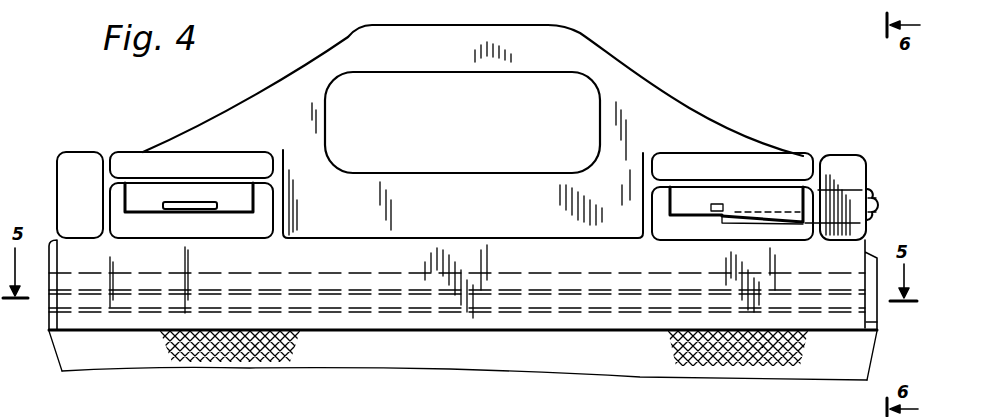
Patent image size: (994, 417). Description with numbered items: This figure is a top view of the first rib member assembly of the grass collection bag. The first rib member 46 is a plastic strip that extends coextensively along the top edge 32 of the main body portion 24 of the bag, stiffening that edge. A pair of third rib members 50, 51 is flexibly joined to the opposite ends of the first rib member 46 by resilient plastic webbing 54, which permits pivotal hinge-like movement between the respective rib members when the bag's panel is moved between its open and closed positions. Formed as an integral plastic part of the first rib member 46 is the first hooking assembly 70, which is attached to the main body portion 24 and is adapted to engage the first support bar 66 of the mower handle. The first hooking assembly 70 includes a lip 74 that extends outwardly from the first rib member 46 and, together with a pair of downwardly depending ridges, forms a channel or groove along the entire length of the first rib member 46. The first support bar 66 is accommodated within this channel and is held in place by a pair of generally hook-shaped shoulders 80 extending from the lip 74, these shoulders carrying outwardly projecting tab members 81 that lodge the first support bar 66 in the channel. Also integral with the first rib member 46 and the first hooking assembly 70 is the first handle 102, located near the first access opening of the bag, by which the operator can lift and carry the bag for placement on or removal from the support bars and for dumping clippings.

The first handle 102 is at (455, 35).
The lip 74 is at (361, 178).
The first hooking assembly 70 is at (150, 151).
The hook-shaped shoulders 80 is at (240, 200).
The tab members 81 is at (183, 204).
The first support bar 66 is at (876, 190).
The resilient plastic webbing 54 is at (877, 256).
The third rib member 51 is at (878, 326).
The third rib member 50 is at (49, 328).
The top edge 32 is at (170, 283).
The main body portion 24 is at (233, 357).
The first rib member 46 is at (365, 322).